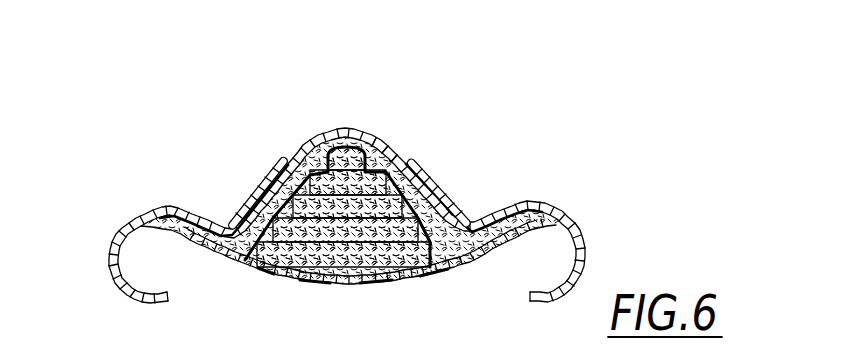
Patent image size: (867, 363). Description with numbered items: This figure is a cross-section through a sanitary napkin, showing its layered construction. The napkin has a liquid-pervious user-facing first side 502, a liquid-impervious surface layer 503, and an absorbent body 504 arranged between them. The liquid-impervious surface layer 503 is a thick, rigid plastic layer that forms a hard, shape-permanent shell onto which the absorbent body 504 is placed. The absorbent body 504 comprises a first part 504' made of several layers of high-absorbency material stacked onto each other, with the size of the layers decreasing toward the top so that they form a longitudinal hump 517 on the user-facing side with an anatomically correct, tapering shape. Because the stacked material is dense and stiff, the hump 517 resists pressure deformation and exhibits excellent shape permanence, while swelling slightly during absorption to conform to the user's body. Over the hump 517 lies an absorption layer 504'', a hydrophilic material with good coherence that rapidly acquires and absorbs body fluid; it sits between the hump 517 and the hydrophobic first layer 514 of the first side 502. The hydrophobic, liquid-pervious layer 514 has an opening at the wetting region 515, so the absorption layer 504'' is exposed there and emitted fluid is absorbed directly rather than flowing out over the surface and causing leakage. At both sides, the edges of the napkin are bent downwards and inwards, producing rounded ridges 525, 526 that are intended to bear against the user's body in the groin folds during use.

The liquid-pervious user-facing first side 502 is at (170, 207).
The liquid-impervious surface layer 503 is at (447, 273).
The absorbent body 504 is at (343, 254).
The first part of the absorbent body 504' is at (414, 121).
The absorption layer 504'' is at (275, 152).
The hydrophobic first layer 514 is at (448, 200).
The wetting region 515 is at (337, 153).
The longitudinal hump 517 is at (347, 148).
The rounded ridge 525 is at (111, 270).
The rounded ridge 526 is at (589, 256).